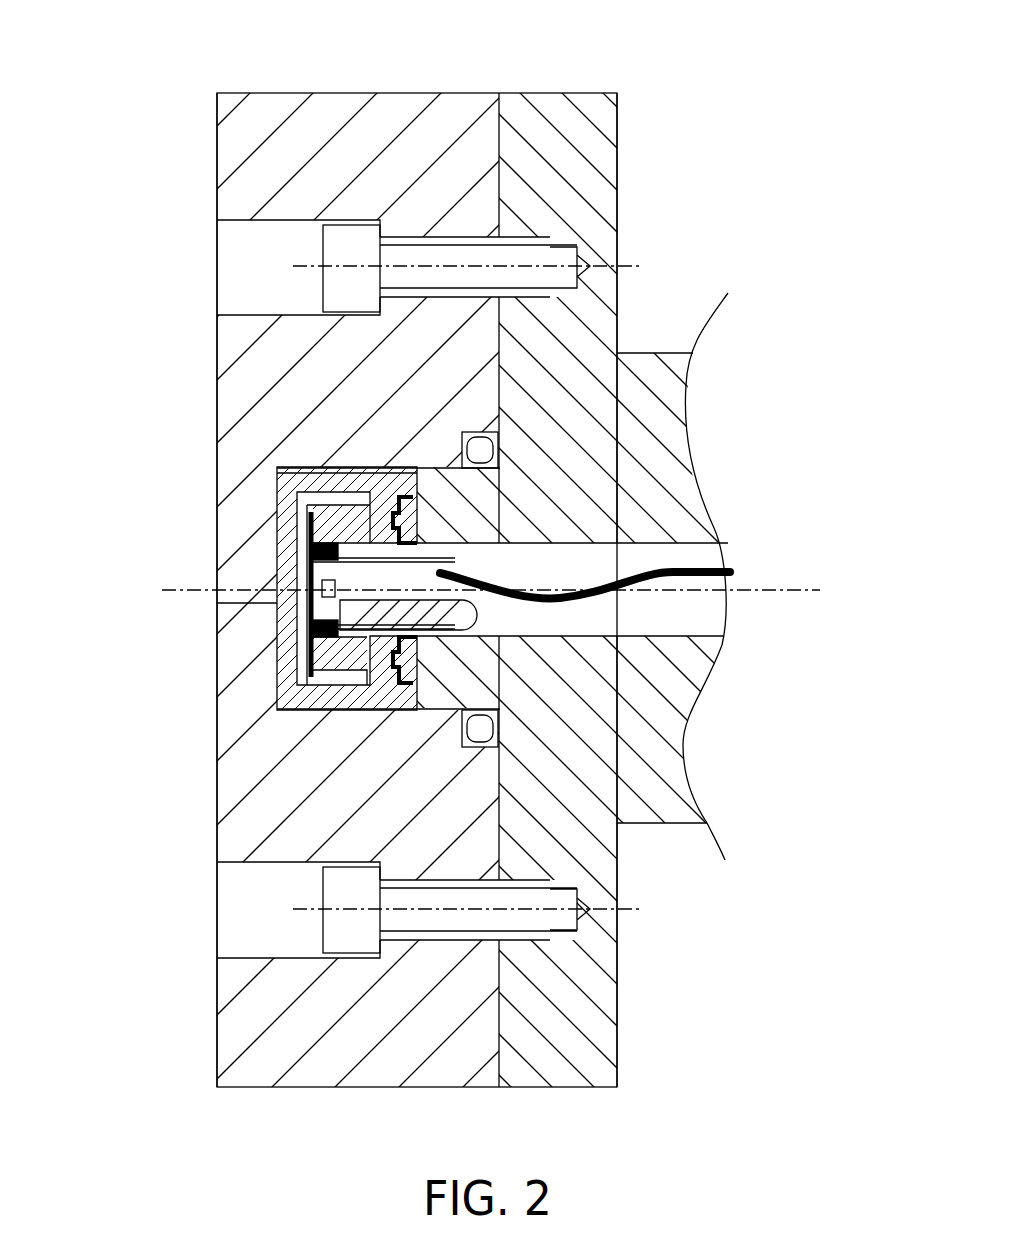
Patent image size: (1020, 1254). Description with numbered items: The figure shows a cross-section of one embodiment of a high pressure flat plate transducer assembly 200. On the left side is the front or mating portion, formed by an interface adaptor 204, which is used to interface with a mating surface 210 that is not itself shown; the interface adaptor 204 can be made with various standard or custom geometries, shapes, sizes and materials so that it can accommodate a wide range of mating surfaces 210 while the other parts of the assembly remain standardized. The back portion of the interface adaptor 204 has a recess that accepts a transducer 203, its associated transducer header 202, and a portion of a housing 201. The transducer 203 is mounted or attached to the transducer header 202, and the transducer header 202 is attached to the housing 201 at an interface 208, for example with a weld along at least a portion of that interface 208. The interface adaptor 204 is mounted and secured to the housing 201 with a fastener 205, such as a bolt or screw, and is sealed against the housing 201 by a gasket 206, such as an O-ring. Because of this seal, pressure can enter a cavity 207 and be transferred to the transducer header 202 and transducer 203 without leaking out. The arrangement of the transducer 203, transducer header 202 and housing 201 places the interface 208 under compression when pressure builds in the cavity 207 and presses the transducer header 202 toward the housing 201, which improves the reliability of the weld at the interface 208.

The high pressure flat plate transducer assembly 200 is at (510, 34).
The housing 201 is at (600, 165).
The transducer header 202 is at (315, 530).
The transducer 203 is at (294, 592).
The interface adaptor 204 is at (236, 1026).
The fastener 205 is at (357, 293).
The gasket 206 is at (478, 445).
The cavity 207 is at (292, 633).
The interface 208 is at (400, 648).
The mating surface 210 is at (207, 370).